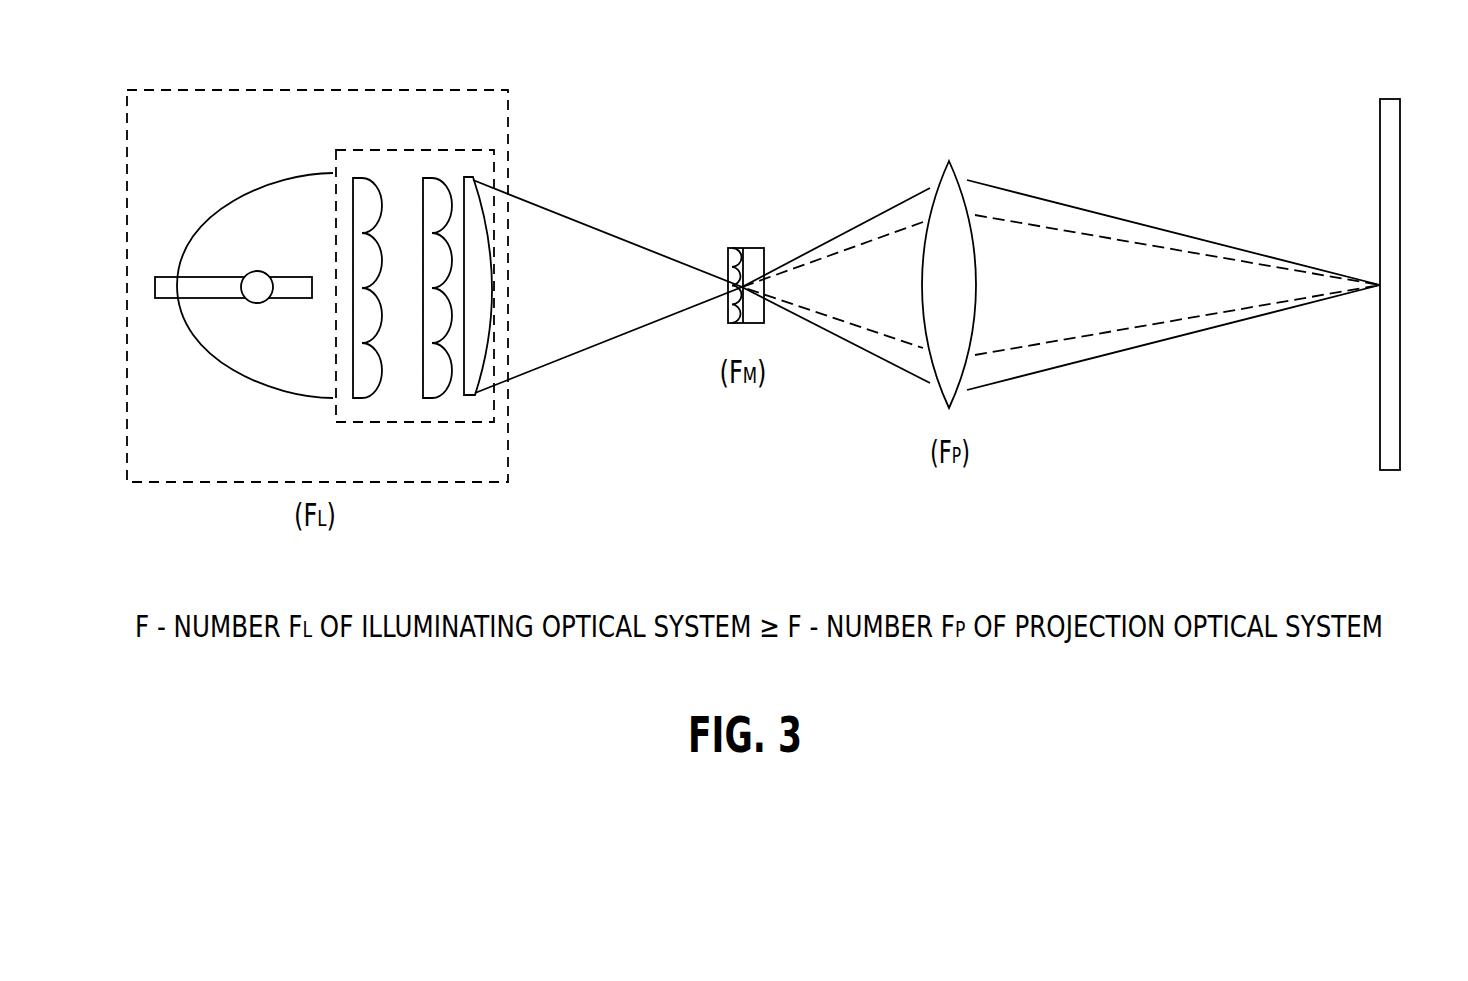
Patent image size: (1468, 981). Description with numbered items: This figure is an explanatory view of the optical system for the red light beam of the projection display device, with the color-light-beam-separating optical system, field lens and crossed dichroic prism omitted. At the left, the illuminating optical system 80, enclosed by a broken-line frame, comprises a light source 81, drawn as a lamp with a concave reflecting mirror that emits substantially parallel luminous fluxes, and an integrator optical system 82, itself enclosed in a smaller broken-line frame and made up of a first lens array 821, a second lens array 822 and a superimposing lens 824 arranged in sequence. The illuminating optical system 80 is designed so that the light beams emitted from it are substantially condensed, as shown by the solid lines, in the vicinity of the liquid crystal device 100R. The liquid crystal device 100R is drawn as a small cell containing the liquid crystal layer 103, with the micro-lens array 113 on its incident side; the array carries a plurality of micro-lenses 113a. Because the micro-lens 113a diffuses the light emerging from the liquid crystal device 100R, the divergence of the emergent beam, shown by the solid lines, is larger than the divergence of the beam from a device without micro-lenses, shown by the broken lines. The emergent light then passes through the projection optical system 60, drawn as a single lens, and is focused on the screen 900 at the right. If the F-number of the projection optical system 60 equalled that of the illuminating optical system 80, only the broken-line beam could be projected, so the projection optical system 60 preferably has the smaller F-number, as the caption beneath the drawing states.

The illuminating optical system 80 is at (400, 88).
The light source 81 is at (227, 380).
The integrator optical system 82 is at (403, 148).
The first lens array 821 is at (362, 400).
The second lens array 822 is at (432, 398).
The superimposing lens 824 is at (470, 397).
The liquid crystal device 100R is at (752, 220).
The micro-lens array 113 is at (701, 235).
The micro-lens 113a is at (727, 262).
The liquid crystal layer 103 is at (745, 252).
The projection optical system 60 is at (962, 172).
The screen 900 is at (1402, 150).